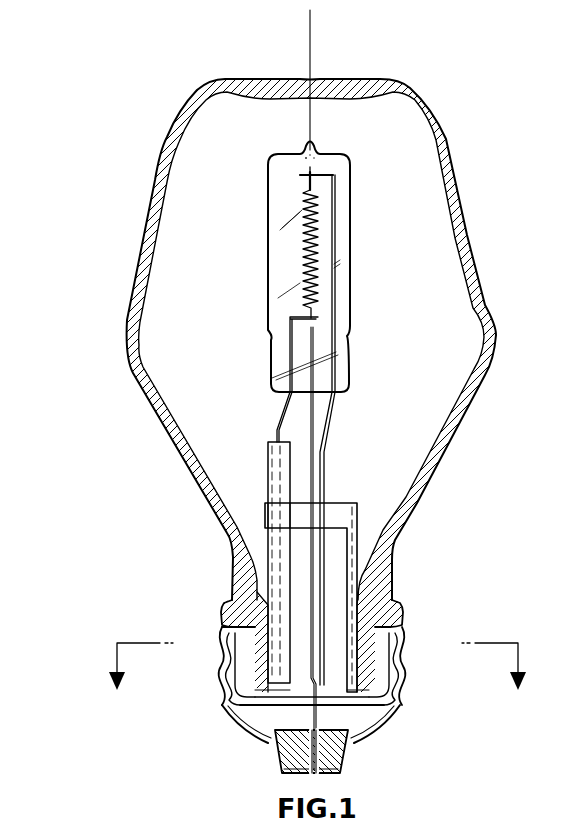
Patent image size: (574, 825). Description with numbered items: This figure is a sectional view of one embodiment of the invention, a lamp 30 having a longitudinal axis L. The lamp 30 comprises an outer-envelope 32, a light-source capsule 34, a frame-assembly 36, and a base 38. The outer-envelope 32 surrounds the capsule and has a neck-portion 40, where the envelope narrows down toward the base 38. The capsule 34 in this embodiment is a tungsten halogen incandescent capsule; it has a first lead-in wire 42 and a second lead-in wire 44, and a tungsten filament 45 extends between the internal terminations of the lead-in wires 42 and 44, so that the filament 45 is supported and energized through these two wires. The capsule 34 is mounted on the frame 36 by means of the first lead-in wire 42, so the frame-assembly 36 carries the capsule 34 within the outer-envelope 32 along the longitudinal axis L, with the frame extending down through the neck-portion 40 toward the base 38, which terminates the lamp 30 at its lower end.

The lamp 30 is at (126, 125).
The outer-envelope 32 is at (214, 78).
The light-source capsule 34 is at (262, 203).
The frame-assembly 36 is at (343, 495).
The base 38 is at (230, 739).
The neck-portion 40 is at (206, 630).
The first lead-in wire 42 is at (280, 413).
The second lead-in wire 44 is at (328, 420).
The tungsten filament 45 is at (312, 192).